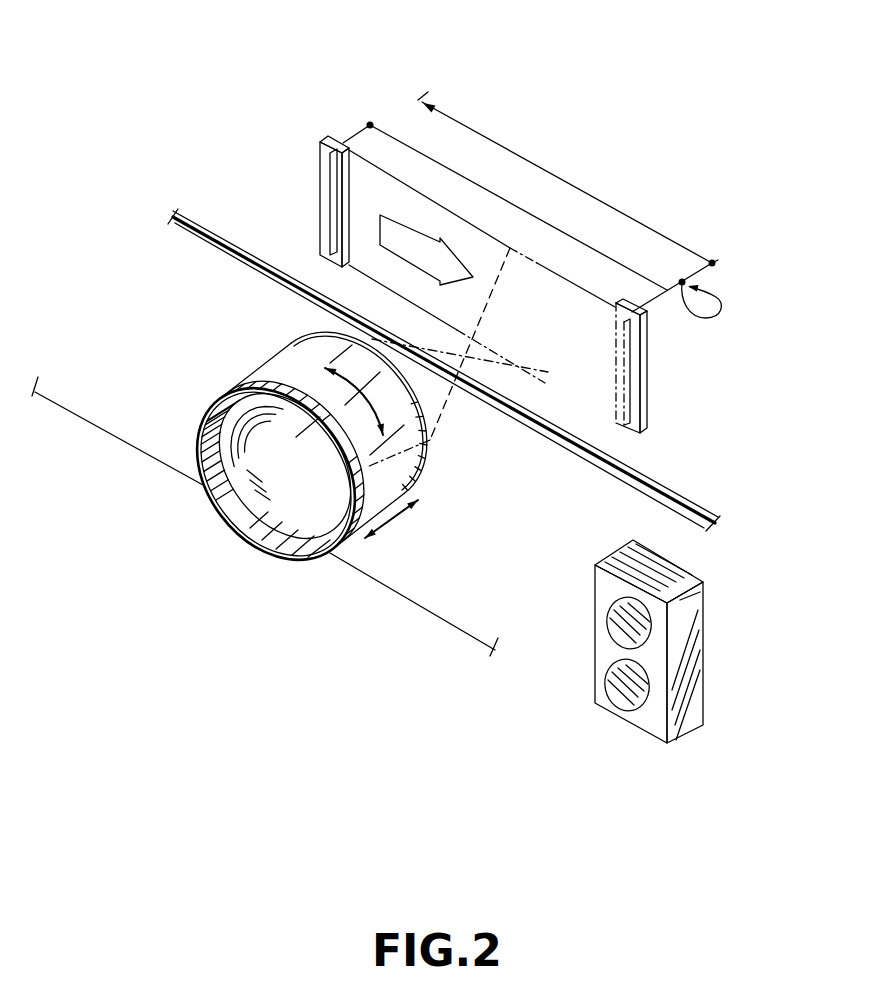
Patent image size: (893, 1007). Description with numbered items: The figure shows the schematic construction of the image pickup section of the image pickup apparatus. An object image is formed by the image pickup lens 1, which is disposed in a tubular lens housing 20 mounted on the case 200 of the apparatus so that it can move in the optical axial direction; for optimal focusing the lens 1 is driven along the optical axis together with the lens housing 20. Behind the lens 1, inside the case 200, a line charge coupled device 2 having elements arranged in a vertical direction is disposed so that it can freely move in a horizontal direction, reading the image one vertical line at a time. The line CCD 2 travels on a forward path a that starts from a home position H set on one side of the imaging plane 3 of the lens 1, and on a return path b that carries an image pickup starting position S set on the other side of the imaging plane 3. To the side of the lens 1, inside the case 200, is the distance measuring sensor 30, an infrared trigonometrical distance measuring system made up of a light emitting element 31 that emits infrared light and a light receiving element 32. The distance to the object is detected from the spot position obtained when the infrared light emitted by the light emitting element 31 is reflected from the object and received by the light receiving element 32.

The image pickup lens 1 is at (242, 516).
The line charge coupled device (CCD) 2 is at (323, 182).
The imaging plane 3 is at (457, 231).
The tubular lens housing 20 is at (363, 535).
The case 200 is at (436, 612).
The distance measuring sensor 30 is at (622, 680).
The light emitting element 31 is at (615, 617).
The light receiving element 32 is at (627, 697).
The home position H is at (370, 124).
The forward path a is at (573, 243).
The return path b is at (600, 200).
The image pickup starting position S is at (712, 263).